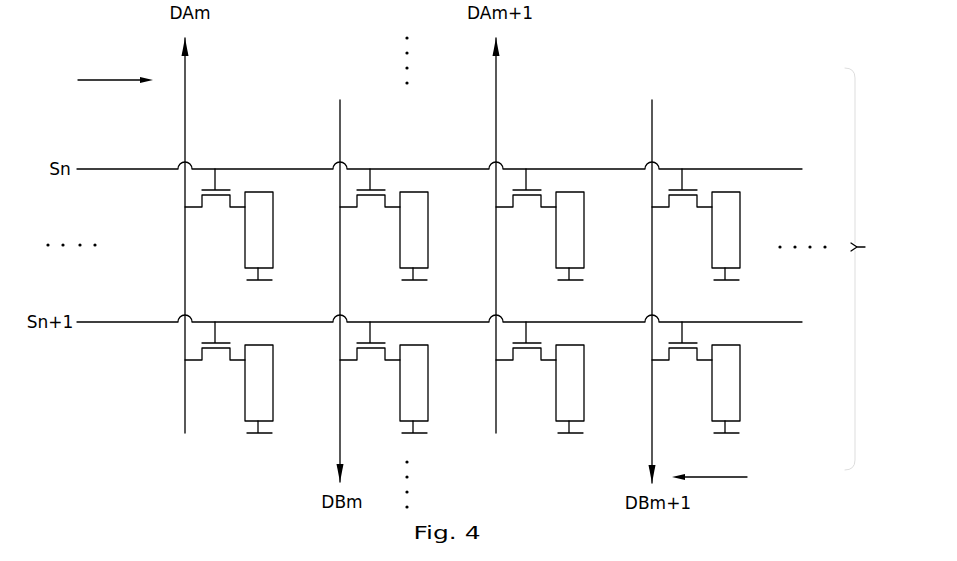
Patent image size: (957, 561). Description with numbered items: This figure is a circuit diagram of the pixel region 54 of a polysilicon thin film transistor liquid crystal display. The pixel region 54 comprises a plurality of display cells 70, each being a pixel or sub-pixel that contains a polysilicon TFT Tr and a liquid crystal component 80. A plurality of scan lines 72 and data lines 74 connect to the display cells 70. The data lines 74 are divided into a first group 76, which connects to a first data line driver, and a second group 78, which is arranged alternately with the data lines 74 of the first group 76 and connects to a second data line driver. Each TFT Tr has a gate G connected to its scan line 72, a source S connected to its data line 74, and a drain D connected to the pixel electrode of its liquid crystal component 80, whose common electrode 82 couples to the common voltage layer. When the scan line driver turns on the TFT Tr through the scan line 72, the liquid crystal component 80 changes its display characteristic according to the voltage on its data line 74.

The pixel region 54 is at (869, 269).
The display cell 70 is at (247, 139).
The scan line 72 is at (107, 165).
The data line 74 is at (186, 128).
The first group 76 is at (102, 80).
The second group 78 is at (722, 477).
The liquid crystal component 80 is at (512, 306).
The common electrode 82 is at (475, 336).